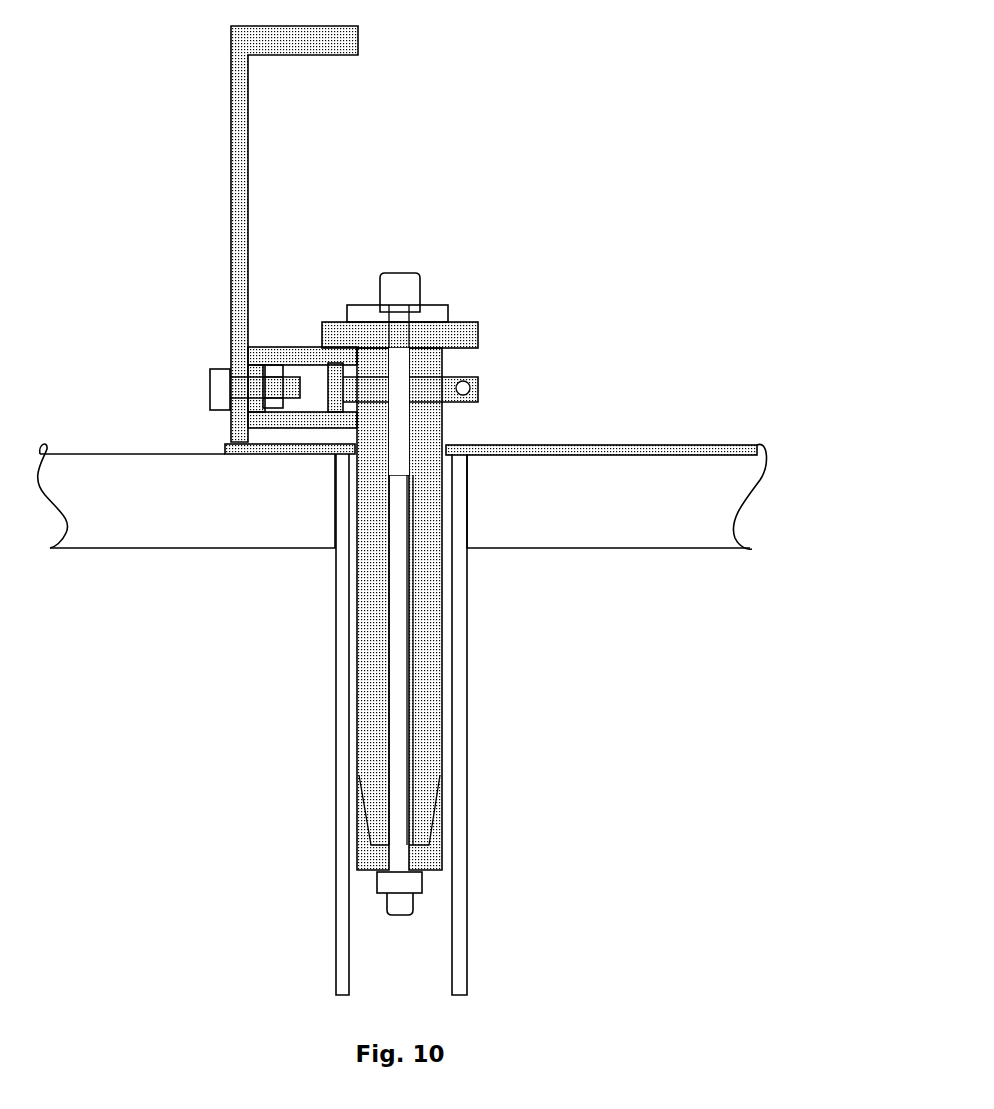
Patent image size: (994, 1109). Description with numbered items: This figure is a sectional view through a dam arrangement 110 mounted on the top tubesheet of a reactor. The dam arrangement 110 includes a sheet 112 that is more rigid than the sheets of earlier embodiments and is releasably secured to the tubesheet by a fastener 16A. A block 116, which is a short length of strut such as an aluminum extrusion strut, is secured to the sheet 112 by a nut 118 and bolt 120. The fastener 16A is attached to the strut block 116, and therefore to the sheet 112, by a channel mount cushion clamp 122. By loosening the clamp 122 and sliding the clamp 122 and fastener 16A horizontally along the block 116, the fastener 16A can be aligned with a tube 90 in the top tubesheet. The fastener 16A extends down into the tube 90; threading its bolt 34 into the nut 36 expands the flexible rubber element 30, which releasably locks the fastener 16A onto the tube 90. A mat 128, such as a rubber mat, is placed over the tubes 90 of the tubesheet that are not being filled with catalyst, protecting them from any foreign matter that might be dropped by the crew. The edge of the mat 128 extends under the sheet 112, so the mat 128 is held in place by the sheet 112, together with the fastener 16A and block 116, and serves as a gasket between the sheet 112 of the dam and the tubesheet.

The dam arrangement 110 is at (495, 165).
The sheet 112 is at (230, 172).
The block 116 is at (298, 348).
The nut 118 is at (275, 365).
The bolt 120 is at (210, 383).
The channel mount cushion clamp 122 is at (473, 388).
The mat 128 is at (223, 448).
The bolt 34 is at (413, 285).
The fastener 16A is at (463, 420).
The flexible rubber element 30 is at (443, 653).
The nut 36 is at (412, 877).
The tube 90 is at (335, 950).